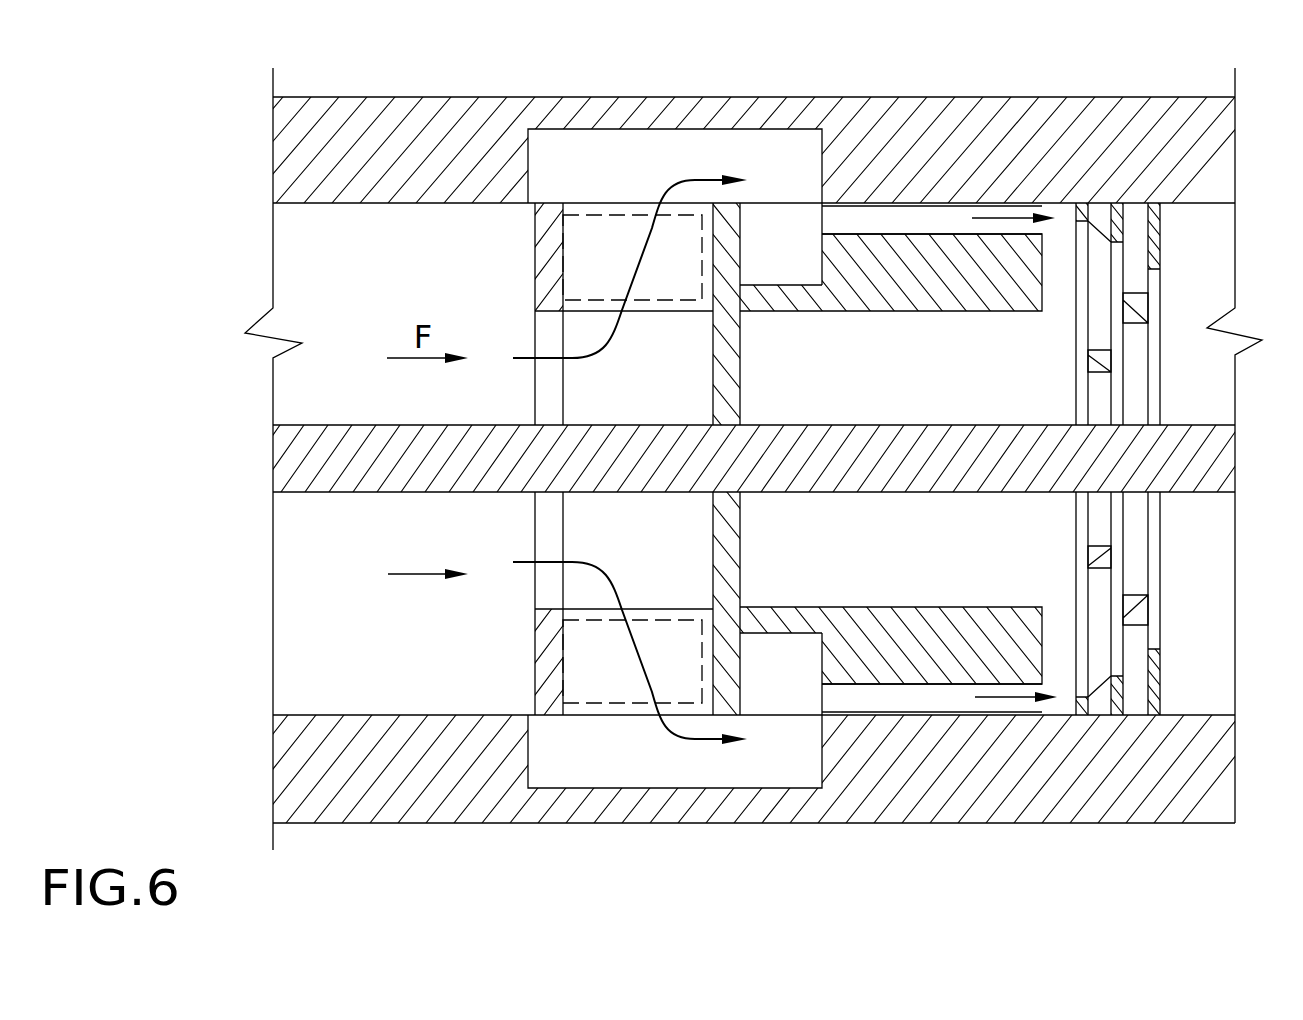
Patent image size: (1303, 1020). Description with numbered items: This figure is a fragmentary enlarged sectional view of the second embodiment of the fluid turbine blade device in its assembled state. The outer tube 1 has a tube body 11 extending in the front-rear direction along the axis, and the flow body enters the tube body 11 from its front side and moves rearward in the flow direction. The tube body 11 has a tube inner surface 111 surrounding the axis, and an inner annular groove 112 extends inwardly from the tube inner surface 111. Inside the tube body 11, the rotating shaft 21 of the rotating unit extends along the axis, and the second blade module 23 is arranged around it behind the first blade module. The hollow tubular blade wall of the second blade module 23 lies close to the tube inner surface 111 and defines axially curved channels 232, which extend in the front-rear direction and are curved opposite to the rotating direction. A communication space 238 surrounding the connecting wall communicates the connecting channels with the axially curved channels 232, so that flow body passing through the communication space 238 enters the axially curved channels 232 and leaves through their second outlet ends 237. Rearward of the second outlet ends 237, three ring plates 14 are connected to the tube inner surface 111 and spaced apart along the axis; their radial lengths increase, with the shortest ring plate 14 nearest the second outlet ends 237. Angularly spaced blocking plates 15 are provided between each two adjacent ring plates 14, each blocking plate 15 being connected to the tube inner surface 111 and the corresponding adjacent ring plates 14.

The outer tube 1 is at (352, 86).
The tube body 11 is at (410, 133).
The inner annular groove 112 is at (678, 128).
The tube inner surface 111 is at (902, 200).
The second blade module 23 is at (1000, 213).
The rotating shaft 21 is at (1220, 437).
The ring plates 14 is at (1115, 519).
The blocking plates 15 is at (1102, 557).
The communication space 238 is at (762, 685).
The axially curved channel 232 is at (945, 705).
The second outlet end 237 is at (1038, 707).